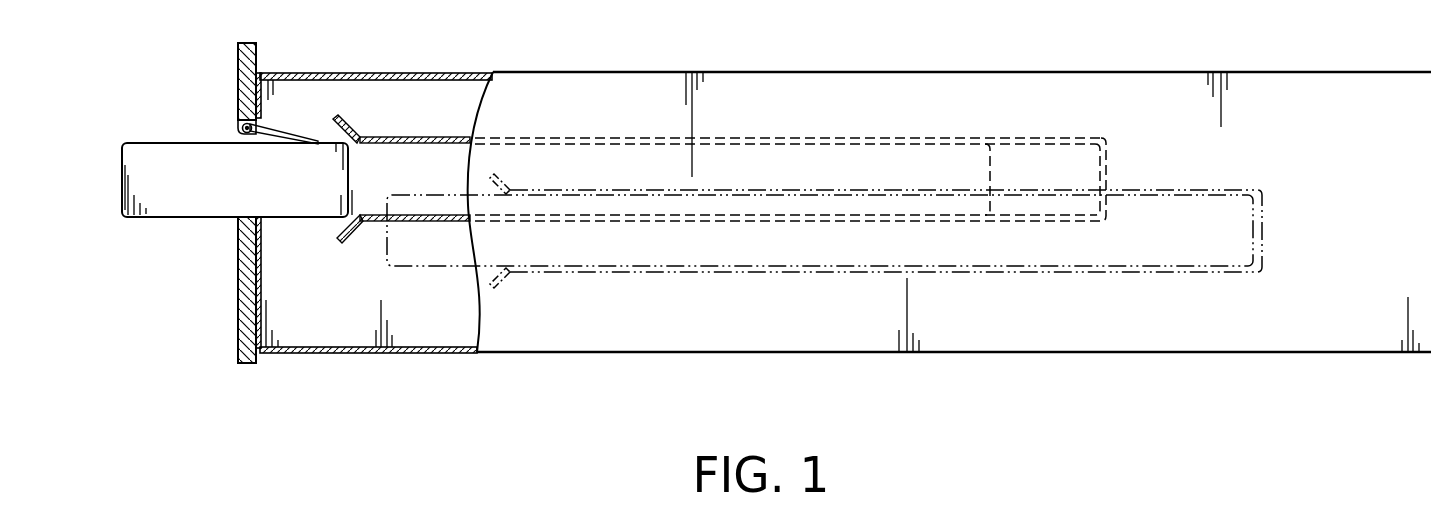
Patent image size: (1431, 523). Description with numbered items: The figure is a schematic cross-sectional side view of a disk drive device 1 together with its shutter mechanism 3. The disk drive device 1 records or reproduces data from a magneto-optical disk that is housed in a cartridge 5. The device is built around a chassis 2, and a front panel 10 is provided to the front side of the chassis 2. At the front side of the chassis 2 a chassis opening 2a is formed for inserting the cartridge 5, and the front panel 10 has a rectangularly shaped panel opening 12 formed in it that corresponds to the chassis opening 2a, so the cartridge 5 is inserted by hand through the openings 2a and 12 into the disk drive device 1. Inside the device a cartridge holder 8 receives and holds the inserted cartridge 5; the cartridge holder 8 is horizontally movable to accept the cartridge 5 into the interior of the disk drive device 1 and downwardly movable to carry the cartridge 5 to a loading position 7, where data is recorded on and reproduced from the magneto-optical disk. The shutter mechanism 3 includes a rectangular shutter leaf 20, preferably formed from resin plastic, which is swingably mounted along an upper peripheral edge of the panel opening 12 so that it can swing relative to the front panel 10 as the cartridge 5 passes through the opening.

The disk drive device 1 is at (979, 361).
The chassis 2 is at (422, 353).
The chassis opening 2a is at (263, 220).
The shutter mechanism 3 is at (220, 56).
The cartridge 5 is at (160, 143).
The loading position 7 is at (1262, 235).
The cartridge holder 8 is at (412, 135).
The front panel 10 is at (242, 325).
The panel opening 12 is at (235, 220).
The shutter leaf 20 is at (287, 128).